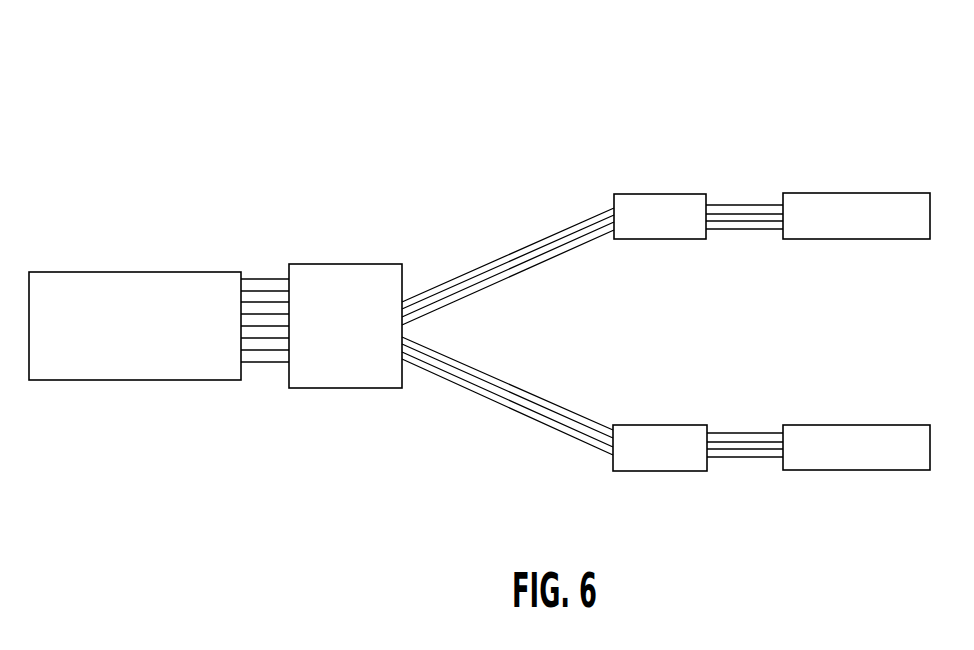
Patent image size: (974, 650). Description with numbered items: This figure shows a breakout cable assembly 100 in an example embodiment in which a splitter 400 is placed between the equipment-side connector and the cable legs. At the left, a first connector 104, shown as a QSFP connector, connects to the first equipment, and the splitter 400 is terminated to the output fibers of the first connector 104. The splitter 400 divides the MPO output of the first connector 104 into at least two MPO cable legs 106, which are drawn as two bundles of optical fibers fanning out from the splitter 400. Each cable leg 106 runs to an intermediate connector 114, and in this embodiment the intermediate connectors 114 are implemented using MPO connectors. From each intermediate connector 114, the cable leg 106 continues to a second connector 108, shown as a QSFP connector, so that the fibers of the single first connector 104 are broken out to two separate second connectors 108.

The breakout cable assembly 100 is at (456, 88).
The first connector 104 is at (118, 272).
The cable legs 106 is at (495, 235).
The second connector 108 is at (890, 193).
The intermediate connector 114 is at (639, 169).
The splitter 400 is at (357, 388).